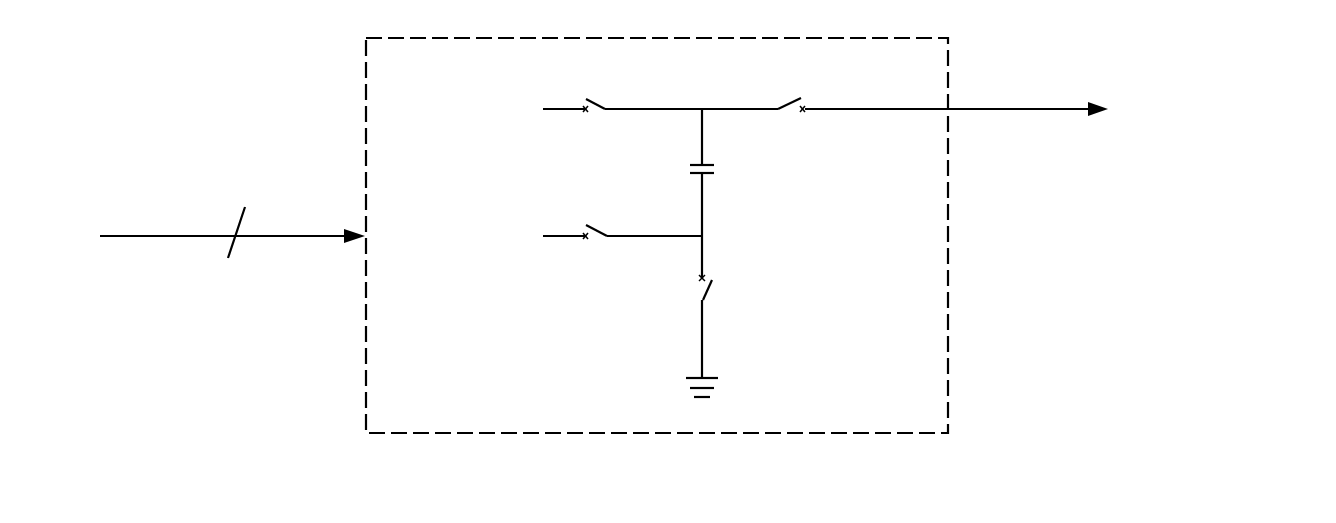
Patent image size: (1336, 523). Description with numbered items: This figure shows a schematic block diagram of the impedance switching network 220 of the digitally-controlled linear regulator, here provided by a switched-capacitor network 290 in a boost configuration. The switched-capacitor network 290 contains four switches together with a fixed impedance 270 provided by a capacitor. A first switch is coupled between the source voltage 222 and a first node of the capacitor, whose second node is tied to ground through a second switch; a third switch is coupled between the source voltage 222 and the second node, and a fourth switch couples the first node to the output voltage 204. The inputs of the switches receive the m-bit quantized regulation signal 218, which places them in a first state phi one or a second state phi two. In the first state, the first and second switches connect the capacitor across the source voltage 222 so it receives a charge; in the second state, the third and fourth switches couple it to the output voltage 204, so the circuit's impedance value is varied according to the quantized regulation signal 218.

The quantized regulation signal 218 is at (232, 209).
The source voltage 222 is at (490, 174).
The output voltage 204 is at (956, 82).
The fixed impedance 270 is at (760, 181).
The switched-capacitor network 290 is at (657, 235).
The impedance switching network 220 is at (699, 235).